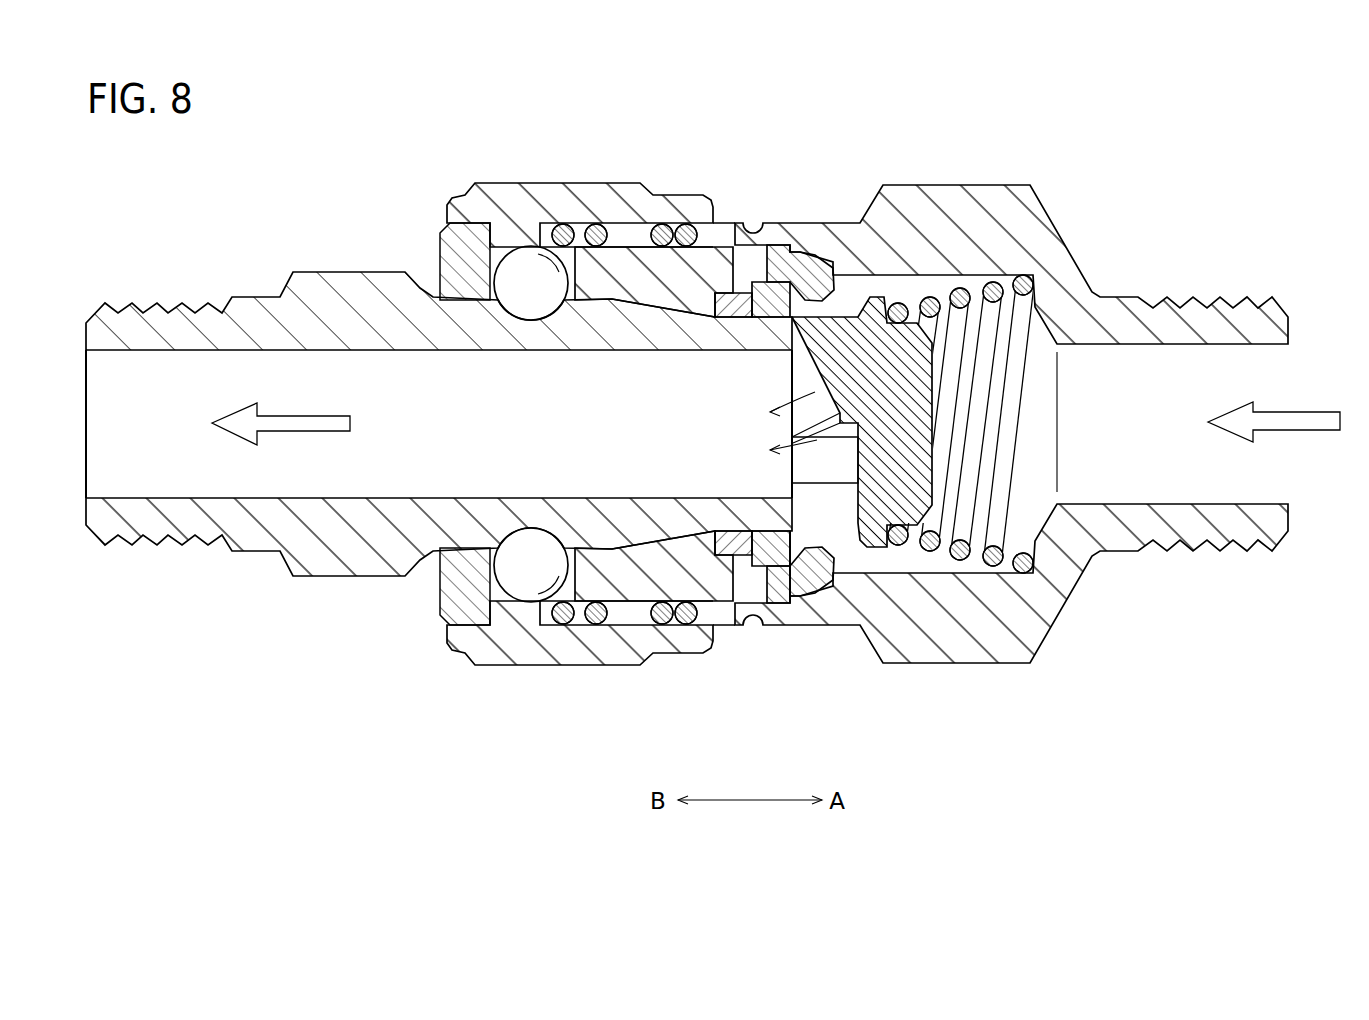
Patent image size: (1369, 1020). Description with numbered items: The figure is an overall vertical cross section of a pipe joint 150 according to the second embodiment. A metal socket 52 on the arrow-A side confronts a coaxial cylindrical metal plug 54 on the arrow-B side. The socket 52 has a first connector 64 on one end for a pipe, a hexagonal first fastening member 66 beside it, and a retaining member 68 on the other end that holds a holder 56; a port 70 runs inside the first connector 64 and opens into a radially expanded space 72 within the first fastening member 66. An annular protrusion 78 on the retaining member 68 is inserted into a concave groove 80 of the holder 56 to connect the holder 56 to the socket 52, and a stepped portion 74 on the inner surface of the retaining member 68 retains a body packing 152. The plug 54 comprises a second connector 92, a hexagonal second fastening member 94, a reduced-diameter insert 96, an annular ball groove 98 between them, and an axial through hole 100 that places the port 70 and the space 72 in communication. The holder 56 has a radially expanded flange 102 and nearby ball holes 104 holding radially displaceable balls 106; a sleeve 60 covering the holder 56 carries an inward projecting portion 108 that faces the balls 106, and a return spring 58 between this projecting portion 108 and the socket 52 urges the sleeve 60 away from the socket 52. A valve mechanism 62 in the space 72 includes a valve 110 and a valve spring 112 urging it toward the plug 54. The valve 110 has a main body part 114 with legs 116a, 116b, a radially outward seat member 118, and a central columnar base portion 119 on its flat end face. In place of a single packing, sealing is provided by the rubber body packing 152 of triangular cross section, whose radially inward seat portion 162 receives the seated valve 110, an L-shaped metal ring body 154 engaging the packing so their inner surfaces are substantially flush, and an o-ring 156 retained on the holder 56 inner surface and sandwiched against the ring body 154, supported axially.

The socket 52 is at (1067, 230).
The plug 54 is at (312, 265).
The holder 56 is at (707, 262).
The return spring 58 is at (683, 623).
The sleeve 60 is at (540, 678).
The valve mechanism 62 is at (797, 450).
The first connector 64 is at (1258, 538).
The first fastening member 66 is at (1010, 642).
The retaining member 68 is at (797, 230).
The port 70 is at (1290, 368).
The space 72 is at (948, 283).
The stepped portion 74 is at (810, 253).
The annular protrusion 78 is at (765, 283).
The concave groove 80 is at (725, 305).
The second connector 92 is at (170, 548).
The second fastening member 94 is at (355, 565).
The insert 96 is at (668, 513).
The ball groove 98 is at (518, 525).
The through hole 100 is at (107, 352).
The flange 102 is at (440, 247).
The ball holes 104 is at (510, 595).
The balls 106 is at (509, 303).
The projecting portion 108 is at (527, 235).
The valve 110 is at (850, 523).
The valve spring 112 is at (1040, 553).
The main body part 114 is at (935, 548).
The leg 116a is at (845, 322).
The leg 116b is at (842, 455).
The seat member 118 is at (878, 297).
The base portion 119 is at (925, 417).
The pipe joint 150 is at (1226, 179).
The body packing 152 is at (800, 596).
The ring body 154 is at (745, 535).
The o-ring 156 is at (727, 535).
The seat portion 162 is at (822, 300).